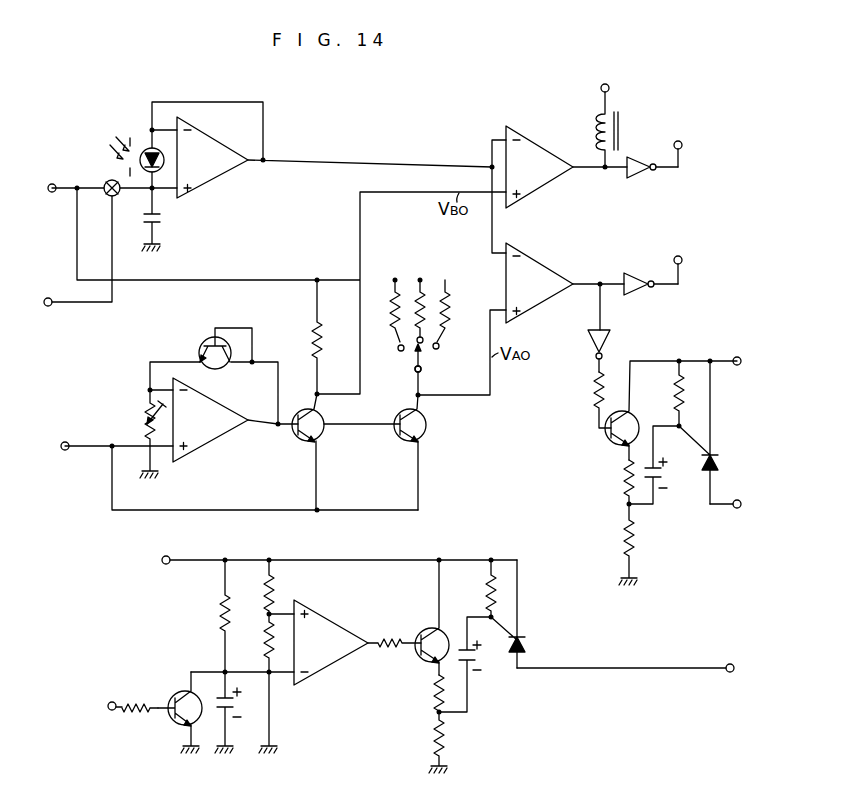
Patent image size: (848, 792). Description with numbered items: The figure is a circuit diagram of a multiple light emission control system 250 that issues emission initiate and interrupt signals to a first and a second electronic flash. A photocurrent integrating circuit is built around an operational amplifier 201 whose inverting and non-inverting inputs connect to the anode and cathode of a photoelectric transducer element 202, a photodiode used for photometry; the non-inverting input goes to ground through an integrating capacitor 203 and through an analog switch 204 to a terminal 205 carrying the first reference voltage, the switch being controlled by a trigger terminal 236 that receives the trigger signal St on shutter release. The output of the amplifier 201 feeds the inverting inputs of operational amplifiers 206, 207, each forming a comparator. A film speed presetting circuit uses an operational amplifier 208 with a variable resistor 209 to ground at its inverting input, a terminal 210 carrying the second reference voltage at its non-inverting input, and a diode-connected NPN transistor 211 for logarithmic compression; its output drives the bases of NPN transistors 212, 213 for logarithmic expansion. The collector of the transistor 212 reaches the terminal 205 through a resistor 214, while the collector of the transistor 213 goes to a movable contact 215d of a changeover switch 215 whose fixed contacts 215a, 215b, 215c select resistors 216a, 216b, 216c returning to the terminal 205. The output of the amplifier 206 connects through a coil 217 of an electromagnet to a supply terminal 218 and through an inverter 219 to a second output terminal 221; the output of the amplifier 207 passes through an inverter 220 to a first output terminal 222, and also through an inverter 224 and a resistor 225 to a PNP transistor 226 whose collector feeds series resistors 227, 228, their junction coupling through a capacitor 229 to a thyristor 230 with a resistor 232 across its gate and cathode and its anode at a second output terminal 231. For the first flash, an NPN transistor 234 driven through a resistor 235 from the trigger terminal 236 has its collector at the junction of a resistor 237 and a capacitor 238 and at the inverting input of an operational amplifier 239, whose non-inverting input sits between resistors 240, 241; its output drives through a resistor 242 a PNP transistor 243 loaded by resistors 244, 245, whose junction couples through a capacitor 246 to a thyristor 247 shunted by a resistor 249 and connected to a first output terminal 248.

The operational amplifier 201 is at (215, 148).
The photoelectric transducer element 202 is at (144, 147).
The integrating capacitor 203 is at (162, 217).
The analog switch 204 is at (105, 183).
The terminal 205 is at (32, 191).
The operational amplifier 206 is at (544, 146).
The operational amplifier 207 is at (544, 263).
The operational amplifier 208 is at (217, 412).
The variable resistor 209 is at (143, 430).
The terminal 210 is at (62, 449).
The NPN transistor 211 is at (209, 337).
The NPN transistor 212 is at (322, 435).
The NPN transistor 213 is at (425, 435).
The resistor 214 is at (312, 335).
The changeover switch 215 is at (433, 369).
The fixed contact 215a is at (439, 350).
The fixed contact 215b is at (425, 340).
The fixed contact 215c is at (382, 344).
The movable contact 215d is at (415, 368).
The resistor 216a is at (449, 300).
The resistor 216b is at (424, 295).
The resistor 216c is at (392, 294).
The coil 217 is at (622, 122).
The terminal 218 is at (601, 88).
The inverter 219 is at (641, 178).
The inverter 220 is at (638, 262).
The second output terminal 221 is at (684, 148).
The first output terminal 222 is at (684, 264).
The inverter 224 is at (588, 338).
The resistor 225 is at (587, 385).
The PNP transistor 226 is at (612, 448).
The resistor 227 is at (616, 486).
The resistor 228 is at (637, 544).
The capacitor 229 is at (668, 490).
The thyristor 230 is at (719, 458).
The second output terminal 231 is at (739, 509).
The resistor 232 is at (672, 392).
The NPN transistor 234 is at (180, 689).
The resistor 235 is at (138, 719).
The trigger terminal 236 is at (72, 495).
The resistor 237 is at (220, 618).
The capacitor 238 is at (240, 712).
The operational amplifier 239 is at (344, 634).
The resistor 240 is at (272, 591).
The resistor 241 is at (268, 635).
The resistor 242 is at (389, 654).
The PNP transistor 243 is at (427, 635).
The resistor 244 is at (430, 695).
The resistor 245 is at (442, 739).
The capacitor 246 is at (484, 660).
The thyristor 247 is at (523, 640).
The first output terminal 248 is at (732, 674).
The resistor 249 is at (488, 592).
The multiple light emission control system 250 is at (404, 138).